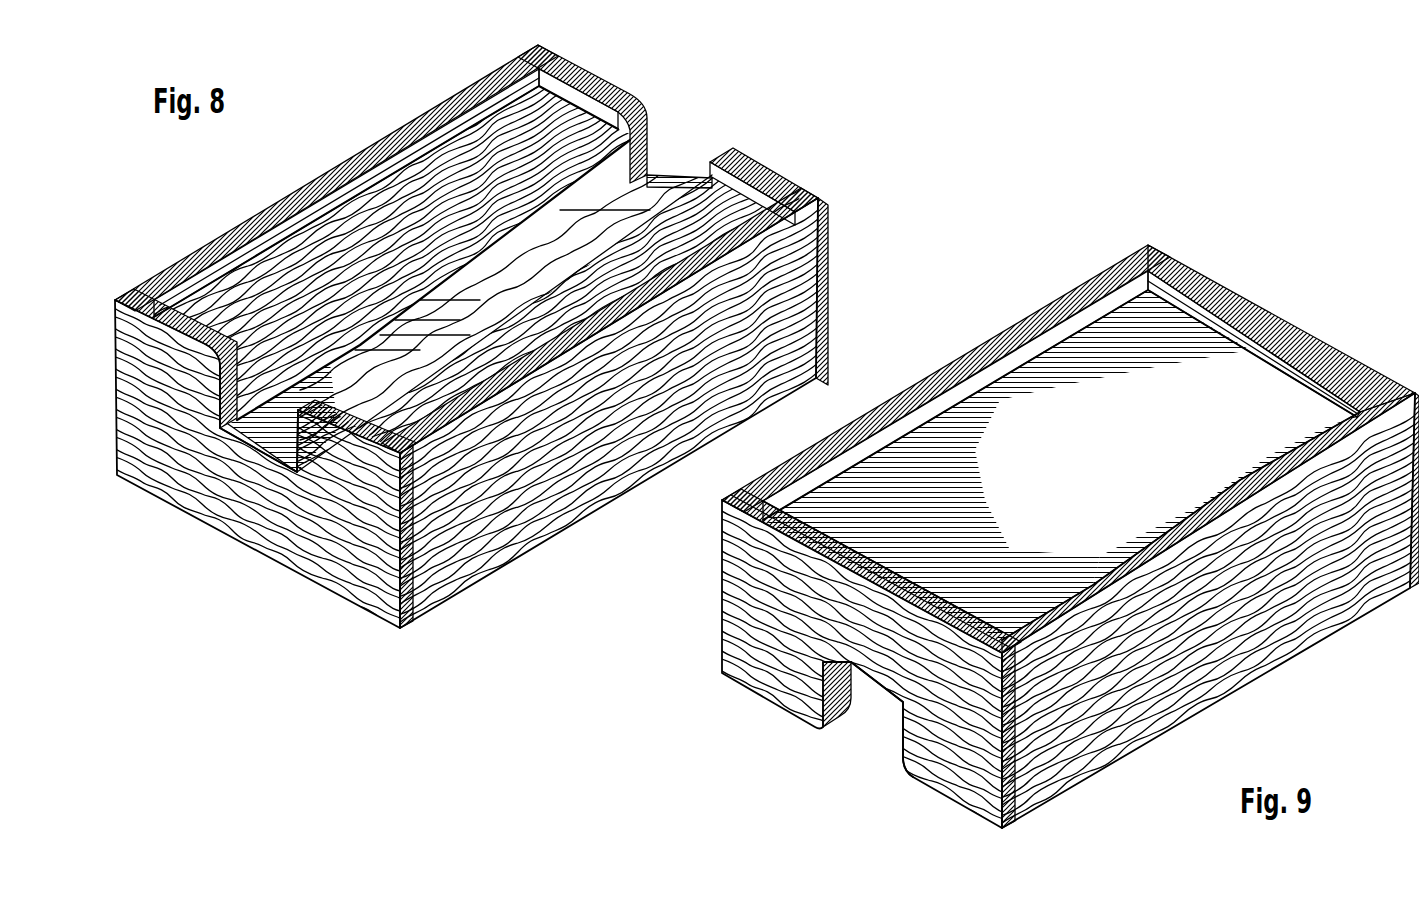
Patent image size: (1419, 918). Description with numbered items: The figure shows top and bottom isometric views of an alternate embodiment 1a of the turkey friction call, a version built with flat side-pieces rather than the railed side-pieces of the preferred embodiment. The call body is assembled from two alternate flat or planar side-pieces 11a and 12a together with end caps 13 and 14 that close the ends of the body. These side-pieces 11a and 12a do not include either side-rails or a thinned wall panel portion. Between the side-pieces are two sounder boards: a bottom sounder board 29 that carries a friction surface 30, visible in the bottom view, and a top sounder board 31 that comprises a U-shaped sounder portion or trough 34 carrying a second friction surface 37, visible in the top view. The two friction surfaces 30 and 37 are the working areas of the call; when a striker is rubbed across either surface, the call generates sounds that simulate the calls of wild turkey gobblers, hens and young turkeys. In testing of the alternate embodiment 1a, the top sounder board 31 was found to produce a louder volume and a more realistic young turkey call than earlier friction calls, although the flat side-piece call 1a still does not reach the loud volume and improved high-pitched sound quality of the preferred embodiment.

In FIG. 8, the alternate embodiment 1a is at (795, 137).
In FIG. 9, the alternate embodiment 1a is at (733, 720).
In FIG. 8, the side-piece 11a is at (837, 272).
In FIG. 9, the side-piece 11a is at (1043, 318).
In FIG. 8, the side-piece 12a is at (142, 297).
In FIG. 9, the side-piece 12a is at (1290, 625).
In FIG. 8, the end cap 13 is at (348, 545).
In FIG. 9, the end cap 13 is at (948, 757).
In FIG. 8, the end cap 14 is at (602, 78).
In FIG. 9, the end cap 14 is at (1260, 318).
In FIG. 9, the bottom sounder board 29 is at (1168, 322).
In FIG. 9, the friction surface 30 is at (1084, 475).
In FIG. 8, the top sounder board 31 is at (542, 125).
In FIG. 8, the trough 34 is at (467, 293).
In FIG. 8, the friction surface 37 is at (643, 118).